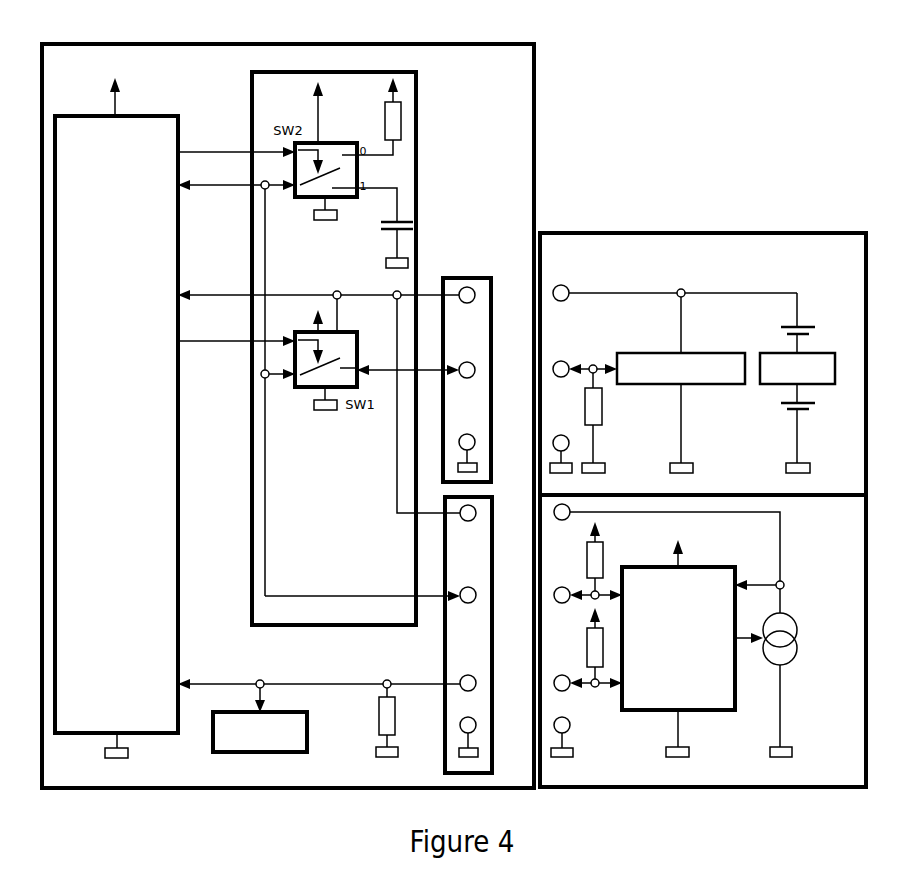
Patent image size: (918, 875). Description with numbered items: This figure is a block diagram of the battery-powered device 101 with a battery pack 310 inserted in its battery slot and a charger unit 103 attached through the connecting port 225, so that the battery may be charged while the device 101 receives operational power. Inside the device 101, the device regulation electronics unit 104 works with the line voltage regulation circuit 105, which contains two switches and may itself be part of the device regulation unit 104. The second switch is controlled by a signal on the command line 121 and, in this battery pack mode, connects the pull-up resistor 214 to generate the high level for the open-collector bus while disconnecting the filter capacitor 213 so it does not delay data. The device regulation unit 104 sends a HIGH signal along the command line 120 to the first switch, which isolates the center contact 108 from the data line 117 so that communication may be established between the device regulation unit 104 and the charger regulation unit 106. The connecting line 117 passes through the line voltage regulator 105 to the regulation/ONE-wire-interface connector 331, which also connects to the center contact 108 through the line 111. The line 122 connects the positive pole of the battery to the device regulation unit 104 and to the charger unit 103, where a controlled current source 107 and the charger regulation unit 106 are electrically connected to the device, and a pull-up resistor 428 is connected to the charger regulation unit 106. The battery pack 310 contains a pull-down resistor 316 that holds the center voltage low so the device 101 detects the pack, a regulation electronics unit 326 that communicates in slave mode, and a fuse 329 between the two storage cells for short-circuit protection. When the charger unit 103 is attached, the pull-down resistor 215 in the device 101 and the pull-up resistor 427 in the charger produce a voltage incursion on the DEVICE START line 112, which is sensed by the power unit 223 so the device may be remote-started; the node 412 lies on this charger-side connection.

The battery-powered device 101 is at (288, 416).
The charger unit 103 is at (703, 641).
The device regulation electronics unit 104 is at (116, 418).
The line voltage regulation circuit 105 is at (334, 348).
The charger regulation unit 106 is at (666, 648).
The controlled current source 107 is at (800, 637).
The center contact 108 is at (468, 338).
The line 111 is at (388, 360).
The DEVICE START line 112 is at (220, 683).
The connecting line 117 is at (312, 597).
The command line 120 is at (237, 348).
The command line 121 is at (228, 148).
The line 122 is at (232, 293).
The capacitor 213 is at (380, 222).
The pull-up resistor 214 is at (403, 113).
The pull-down resistor 215 is at (377, 710).
The power unit 223 is at (260, 732).
The connecting port 225 is at (492, 645).
The battery pack 310 is at (703, 364).
The pull-down resistor 316 is at (606, 405).
The regulation electronics unit 326 is at (657, 385).
The fuse 329 is at (797, 383).
The regulation/ONE-wire-interface connector 331 is at (477, 268).
The node 412 is at (595, 690).
The pull-up resistor 427 is at (587, 660).
The pull-up resistor 428 is at (607, 555).